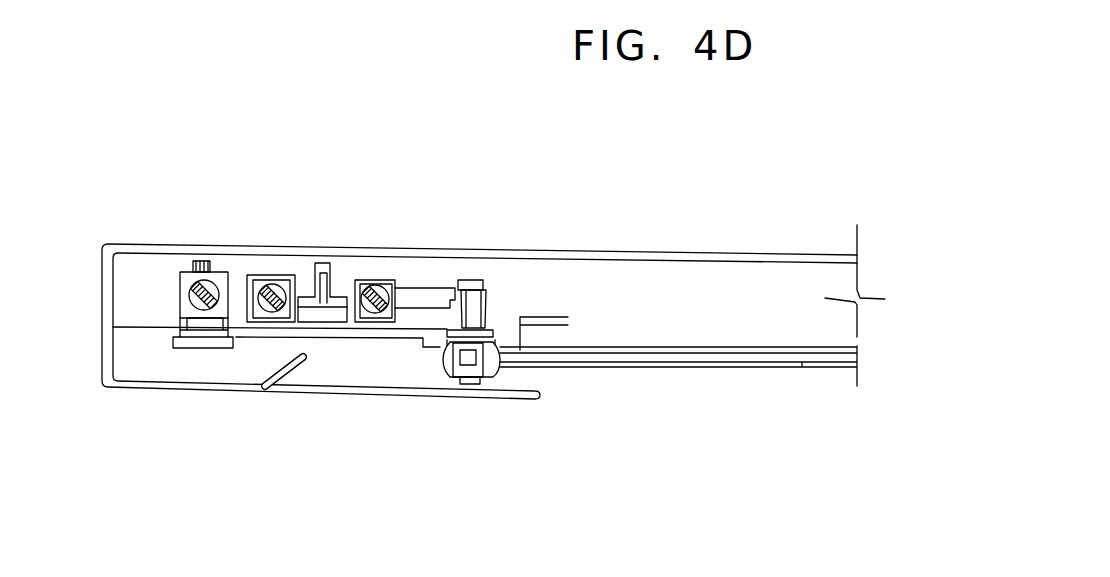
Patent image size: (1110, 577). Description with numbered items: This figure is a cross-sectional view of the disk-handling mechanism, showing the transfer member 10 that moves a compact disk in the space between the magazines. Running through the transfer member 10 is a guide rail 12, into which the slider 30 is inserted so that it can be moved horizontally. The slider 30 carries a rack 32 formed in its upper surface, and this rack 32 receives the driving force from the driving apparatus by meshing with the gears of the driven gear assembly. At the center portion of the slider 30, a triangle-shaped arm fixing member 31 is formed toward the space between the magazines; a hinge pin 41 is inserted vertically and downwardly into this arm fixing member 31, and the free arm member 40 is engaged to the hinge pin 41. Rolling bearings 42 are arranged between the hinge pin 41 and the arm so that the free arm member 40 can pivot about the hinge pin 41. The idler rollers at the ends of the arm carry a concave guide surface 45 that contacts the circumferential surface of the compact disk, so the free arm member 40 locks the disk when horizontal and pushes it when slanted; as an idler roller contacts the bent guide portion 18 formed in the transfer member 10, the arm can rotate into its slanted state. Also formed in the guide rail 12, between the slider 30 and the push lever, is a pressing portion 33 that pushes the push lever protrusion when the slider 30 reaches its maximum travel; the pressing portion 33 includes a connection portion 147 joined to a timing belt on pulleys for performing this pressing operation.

The transfer member 10 is at (230, 246).
The guide rail 12 is at (367, 288).
The guide portion 18 is at (292, 370).
The slider 30 is at (381, 279).
The arm fixing member 31 is at (428, 290).
The rack 32 is at (333, 259).
The pressing portion 33 is at (175, 283).
The free arm member 40 is at (513, 377).
The hinge pin 41 is at (475, 281).
The rolling bearings 42 is at (485, 375).
The concave guide surface 45 is at (448, 362).
The connection portion 147 is at (193, 265).